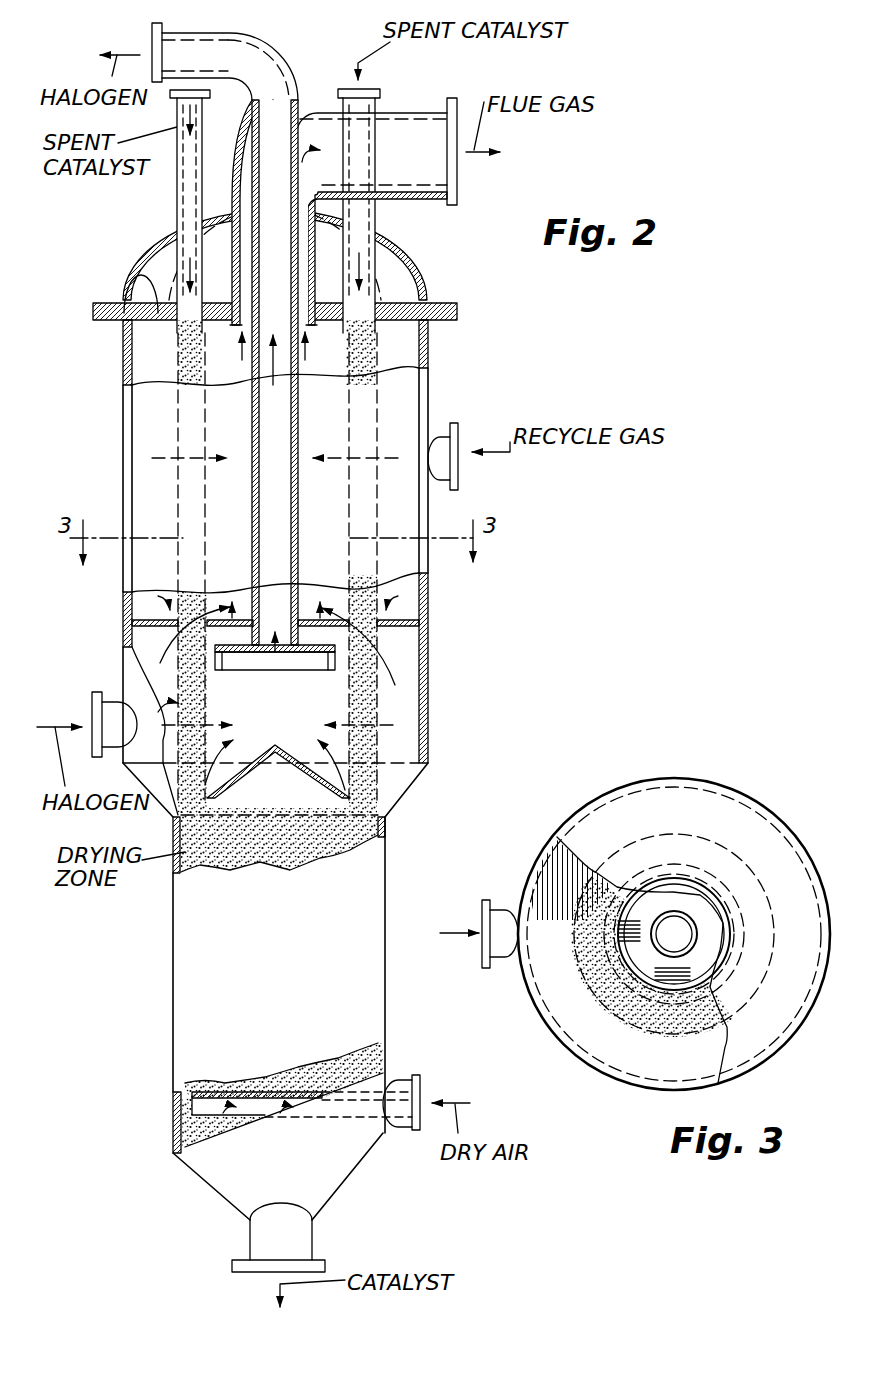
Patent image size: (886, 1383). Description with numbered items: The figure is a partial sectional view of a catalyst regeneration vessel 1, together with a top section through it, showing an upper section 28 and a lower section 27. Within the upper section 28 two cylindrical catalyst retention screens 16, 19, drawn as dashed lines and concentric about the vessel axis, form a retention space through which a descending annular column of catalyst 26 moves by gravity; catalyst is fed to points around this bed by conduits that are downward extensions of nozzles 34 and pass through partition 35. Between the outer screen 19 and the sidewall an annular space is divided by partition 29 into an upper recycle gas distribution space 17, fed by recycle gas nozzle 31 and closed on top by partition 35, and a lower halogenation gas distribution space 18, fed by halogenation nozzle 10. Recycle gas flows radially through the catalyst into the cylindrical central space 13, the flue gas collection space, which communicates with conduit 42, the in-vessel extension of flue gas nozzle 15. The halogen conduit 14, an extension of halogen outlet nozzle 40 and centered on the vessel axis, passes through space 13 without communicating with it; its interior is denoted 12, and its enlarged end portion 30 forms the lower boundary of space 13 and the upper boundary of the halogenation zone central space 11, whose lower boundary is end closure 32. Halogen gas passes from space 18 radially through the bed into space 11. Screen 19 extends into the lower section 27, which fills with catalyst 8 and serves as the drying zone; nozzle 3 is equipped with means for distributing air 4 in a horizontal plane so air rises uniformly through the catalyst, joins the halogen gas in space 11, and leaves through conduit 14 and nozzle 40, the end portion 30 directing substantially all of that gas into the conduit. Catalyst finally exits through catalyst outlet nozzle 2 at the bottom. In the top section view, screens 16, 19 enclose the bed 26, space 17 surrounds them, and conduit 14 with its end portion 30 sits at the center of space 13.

In FIG. 2, the regeneration vessel 1 is at (432, 376).
In FIG. 2, the catalyst outlet nozzle 2 is at (248, 1239).
In FIG. 2, the air nozzle 3 is at (420, 1075).
In FIG. 2, the means for distributing air 4 is at (267, 1082).
In FIG. 2, the catalyst 8 is at (226, 862).
In FIG. 2, the halogenation nozzle 10 is at (106, 702).
In FIG. 3, the halogenation nozzle 10 is at (507, 908).
In FIG. 2, the halogenation zone central space 11 is at (293, 709).
In FIG. 2, the interior of conduit 14 12 is at (276, 337).
In FIG. 3, the interior of conduit 14 12 is at (693, 918).
In FIG. 2, the central space 13 is at (232, 374).
In FIG. 3, the central space 13 is at (700, 962).
In FIG. 2, the halogen conduit 14 is at (293, 298).
In FIG. 3, the halogen conduit 14 is at (674, 930).
In FIG. 2, the flue gas nozzle 15 is at (455, 97).
In FIG. 2, the catalyst retention screen 16 is at (347, 439).
In FIG. 3, the catalyst retention screen 16 is at (577, 945).
In FIG. 2, the recycle gas distribution space 17 is at (140, 606).
In FIG. 3, the recycle gas distribution space 17 is at (570, 1002).
In FIG. 2, the halogenation gas distribution space 18 is at (147, 640).
In FIG. 2, the catalyst retention screen 19 is at (180, 441).
In FIG. 3, the catalyst retention screen 19 is at (677, 1032).
In FIG. 2, the annular column of catalyst 26 is at (180, 362).
In FIG. 3, the annular column of catalyst 26 is at (657, 1013).
In FIG. 2, the lower section 27 is at (385, 866).
In FIG. 2, the upper section 28 is at (428, 640).
In FIG. 3, the upper section 28 is at (641, 780).
In FIG. 2, the partition 29 is at (398, 612).
In FIG. 3, the partition 29 is at (598, 1042).
In FIG. 2, the end portion of conduit 14 30 is at (240, 670).
In FIG. 3, the end portion of conduit 14 30 is at (625, 1005).
In FIG. 2, the recycle gas nozzle 31 is at (442, 436).
In FIG. 2, the end closure 32 is at (287, 746).
In FIG. 2, the catalyst nozzles 34 is at (202, 140).
In FIG. 2, the partition 35 is at (150, 297).
In FIG. 2, the halogen outlet nozzle 40 is at (298, 60).
In FIG. 2, the conduit 42 is at (316, 237).